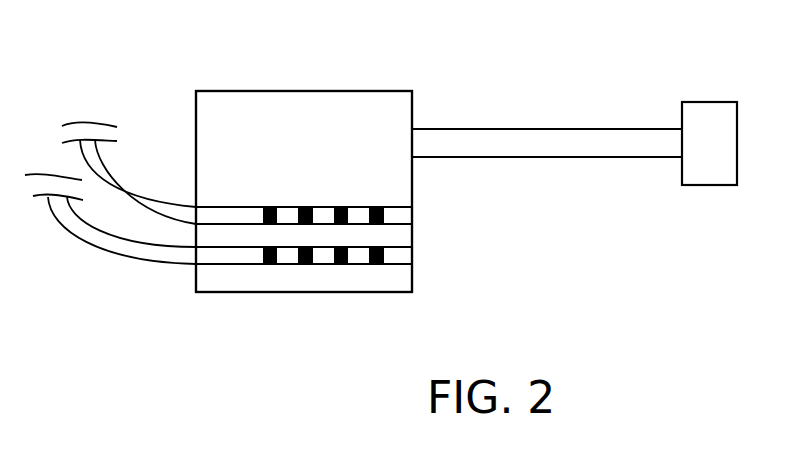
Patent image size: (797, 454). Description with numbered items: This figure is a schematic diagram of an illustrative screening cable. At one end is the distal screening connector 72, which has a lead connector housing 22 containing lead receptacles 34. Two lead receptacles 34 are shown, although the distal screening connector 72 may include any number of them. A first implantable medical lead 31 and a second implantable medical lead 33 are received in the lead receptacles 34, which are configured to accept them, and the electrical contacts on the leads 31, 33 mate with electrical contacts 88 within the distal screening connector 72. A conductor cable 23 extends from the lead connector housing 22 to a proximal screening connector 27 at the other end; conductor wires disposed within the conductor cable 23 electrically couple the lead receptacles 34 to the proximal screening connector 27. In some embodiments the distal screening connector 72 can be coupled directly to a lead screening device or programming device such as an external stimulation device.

The lead connector housing 22 is at (315, 132).
The conductor cable 23 is at (520, 128).
The proximal screening connector 27 is at (708, 102).
The first implantable medical lead 31 is at (133, 193).
The second implantable medical lead 33 is at (70, 233).
The lead receptacles 34 is at (395, 205).
The distal screening connector 72 is at (245, 91).
The electrical contacts 88 is at (363, 265).